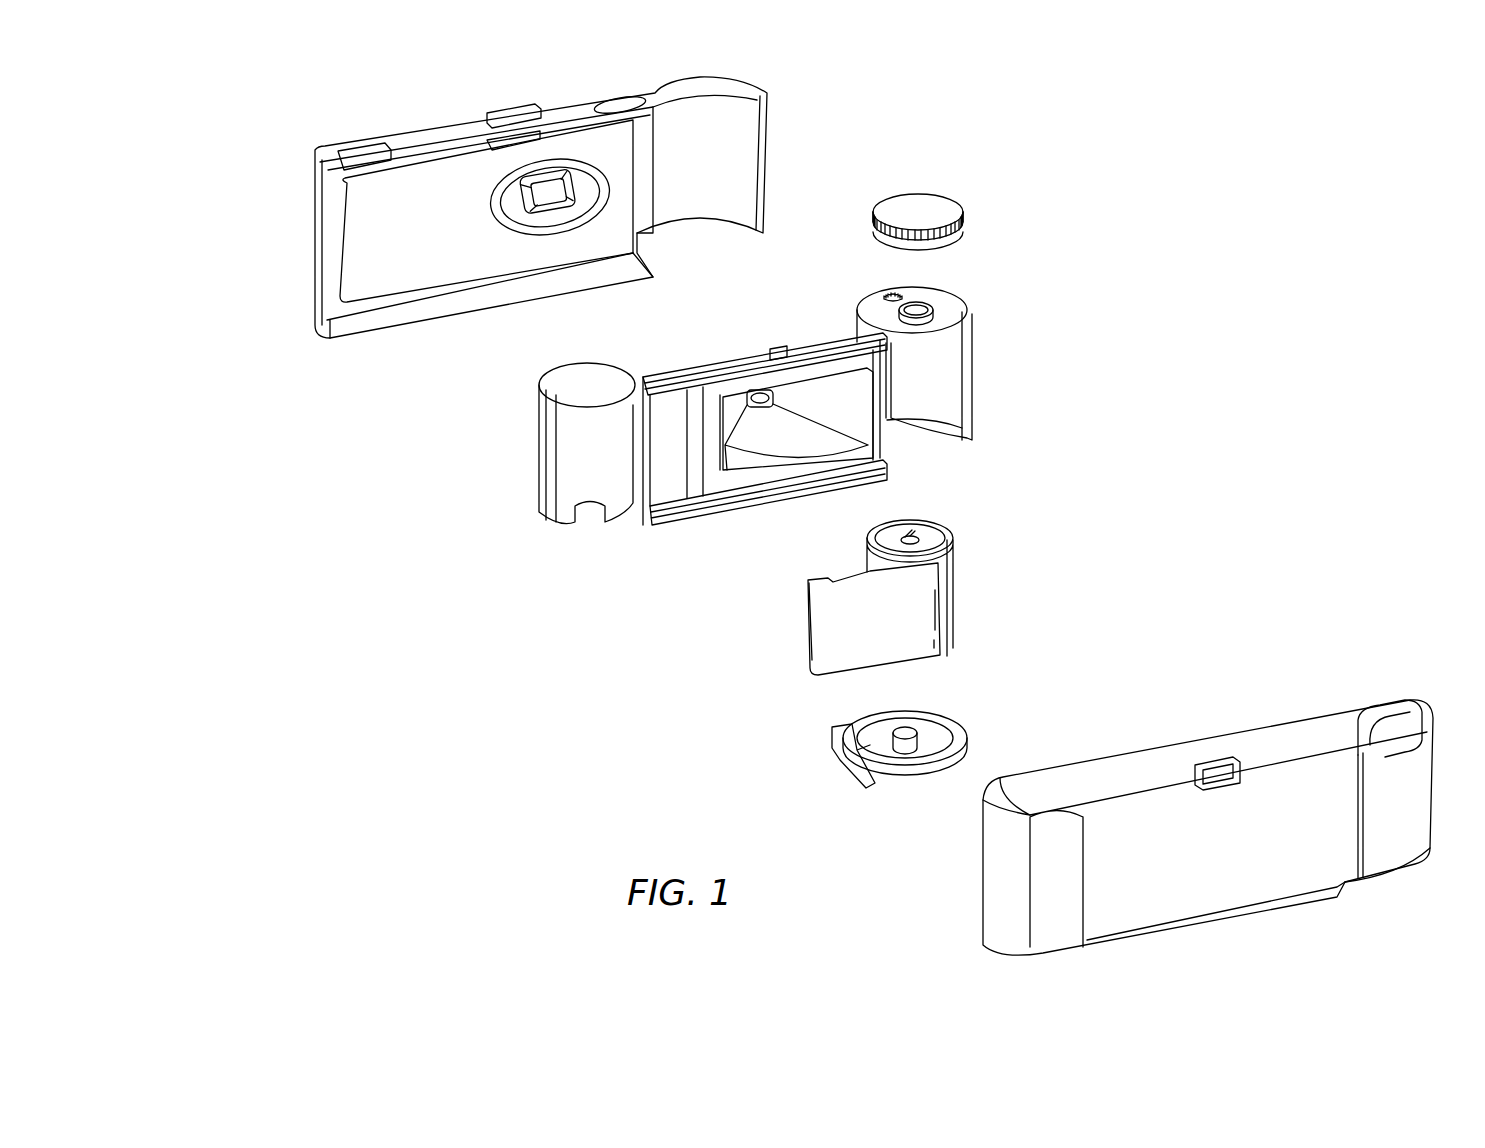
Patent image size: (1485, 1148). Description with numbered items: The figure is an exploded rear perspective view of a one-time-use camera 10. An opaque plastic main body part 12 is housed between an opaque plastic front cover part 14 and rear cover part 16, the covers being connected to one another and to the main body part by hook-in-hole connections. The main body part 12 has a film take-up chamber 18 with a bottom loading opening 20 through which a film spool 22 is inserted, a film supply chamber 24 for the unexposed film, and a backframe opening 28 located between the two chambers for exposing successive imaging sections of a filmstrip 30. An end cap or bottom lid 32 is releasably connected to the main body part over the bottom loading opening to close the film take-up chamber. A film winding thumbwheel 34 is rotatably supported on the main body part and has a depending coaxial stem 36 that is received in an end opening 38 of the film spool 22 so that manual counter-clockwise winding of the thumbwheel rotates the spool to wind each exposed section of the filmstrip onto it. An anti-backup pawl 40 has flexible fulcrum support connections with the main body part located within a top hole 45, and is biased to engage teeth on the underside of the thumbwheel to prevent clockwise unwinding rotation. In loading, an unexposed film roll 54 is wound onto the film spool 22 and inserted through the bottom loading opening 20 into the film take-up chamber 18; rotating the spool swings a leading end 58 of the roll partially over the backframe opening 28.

The one-time-use camera 10 is at (382, 677).
The main body part 12 is at (733, 400).
The front cover part 14 is at (312, 292).
The rear cover part 16 is at (978, 892).
The film take-up chamber 18 is at (906, 360).
The bottom loading opening 20 is at (932, 424).
The film spool 22 is at (879, 588).
The film supply chamber 24 is at (575, 432).
The backframe opening 28 is at (760, 460).
The filmstrip 30 is at (890, 621).
The end cap or bottom lid 32 is at (850, 768).
The film winding thumbwheel 34 is at (940, 212).
The depending coaxial stem 36 is at (950, 232).
The end opening 38 is at (903, 536).
The anti-backup pawl 40 is at (897, 295).
The top hole 45 is at (890, 307).
The unexposed film roll 54 is at (955, 603).
The leading end 58 is at (820, 652).